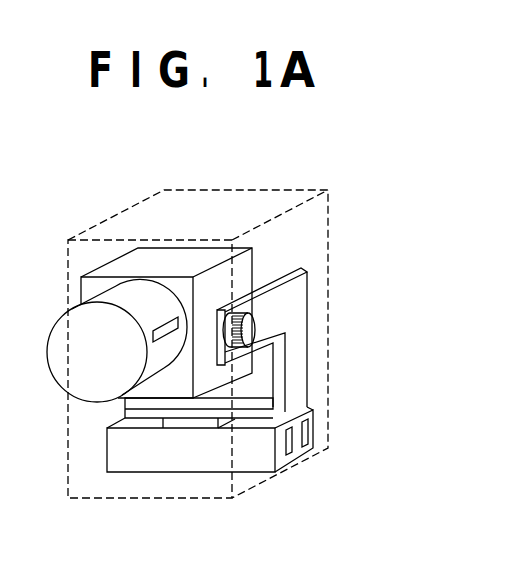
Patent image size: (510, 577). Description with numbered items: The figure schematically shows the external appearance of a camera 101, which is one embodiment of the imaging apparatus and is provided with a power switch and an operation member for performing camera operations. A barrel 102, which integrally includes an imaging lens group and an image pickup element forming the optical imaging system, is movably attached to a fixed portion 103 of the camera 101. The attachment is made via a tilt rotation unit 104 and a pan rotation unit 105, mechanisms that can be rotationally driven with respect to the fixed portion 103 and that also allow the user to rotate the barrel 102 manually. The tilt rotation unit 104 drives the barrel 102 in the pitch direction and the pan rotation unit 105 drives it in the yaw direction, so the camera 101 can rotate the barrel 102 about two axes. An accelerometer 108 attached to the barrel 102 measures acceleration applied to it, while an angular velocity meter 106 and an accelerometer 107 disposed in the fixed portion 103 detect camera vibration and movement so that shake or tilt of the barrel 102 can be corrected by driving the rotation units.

The camera 101 is at (307, 190).
The barrel 102 is at (107, 263).
The fixed portion 103 is at (117, 462).
The tilt rotation unit 104 is at (255, 327).
The pan rotation unit 105 is at (172, 426).
The angular velocity meter 106 is at (313, 436).
The accelerometer 107 is at (290, 457).
The accelerometer 108 is at (168, 331).